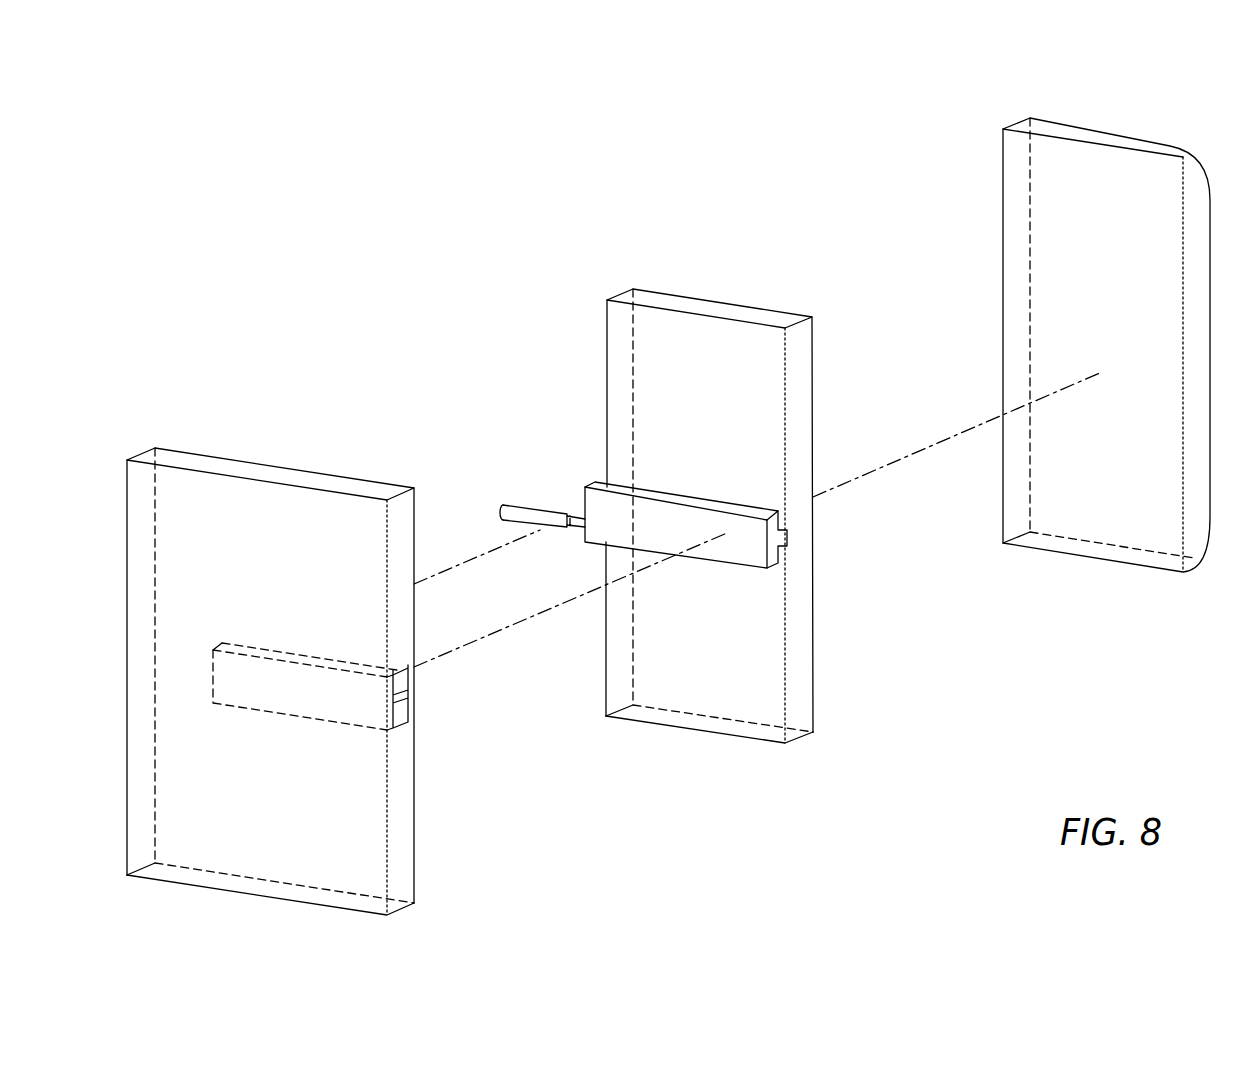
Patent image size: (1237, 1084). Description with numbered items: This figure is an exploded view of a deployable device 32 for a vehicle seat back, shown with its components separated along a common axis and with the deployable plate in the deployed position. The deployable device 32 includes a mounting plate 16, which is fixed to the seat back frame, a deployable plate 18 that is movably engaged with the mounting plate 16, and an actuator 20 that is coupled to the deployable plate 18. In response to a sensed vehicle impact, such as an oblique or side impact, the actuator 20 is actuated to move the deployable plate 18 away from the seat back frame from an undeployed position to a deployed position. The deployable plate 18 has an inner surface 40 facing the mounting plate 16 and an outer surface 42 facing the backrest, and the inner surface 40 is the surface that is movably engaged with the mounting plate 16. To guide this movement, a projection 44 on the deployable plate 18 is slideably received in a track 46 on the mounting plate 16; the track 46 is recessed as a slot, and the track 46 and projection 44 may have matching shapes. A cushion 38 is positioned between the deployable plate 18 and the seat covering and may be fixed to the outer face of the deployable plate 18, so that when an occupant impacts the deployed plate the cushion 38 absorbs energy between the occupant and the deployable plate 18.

The mounting plate 16 is at (228, 495).
The deployable plate 18 is at (709, 489).
The actuator 20 is at (518, 505).
The deployable device 32 is at (540, 217).
The cushion 38 is at (1123, 130).
The inner surface 40 is at (657, 368).
The outer surface 42 is at (750, 305).
The projection 44 is at (743, 548).
The track 46 is at (403, 698).